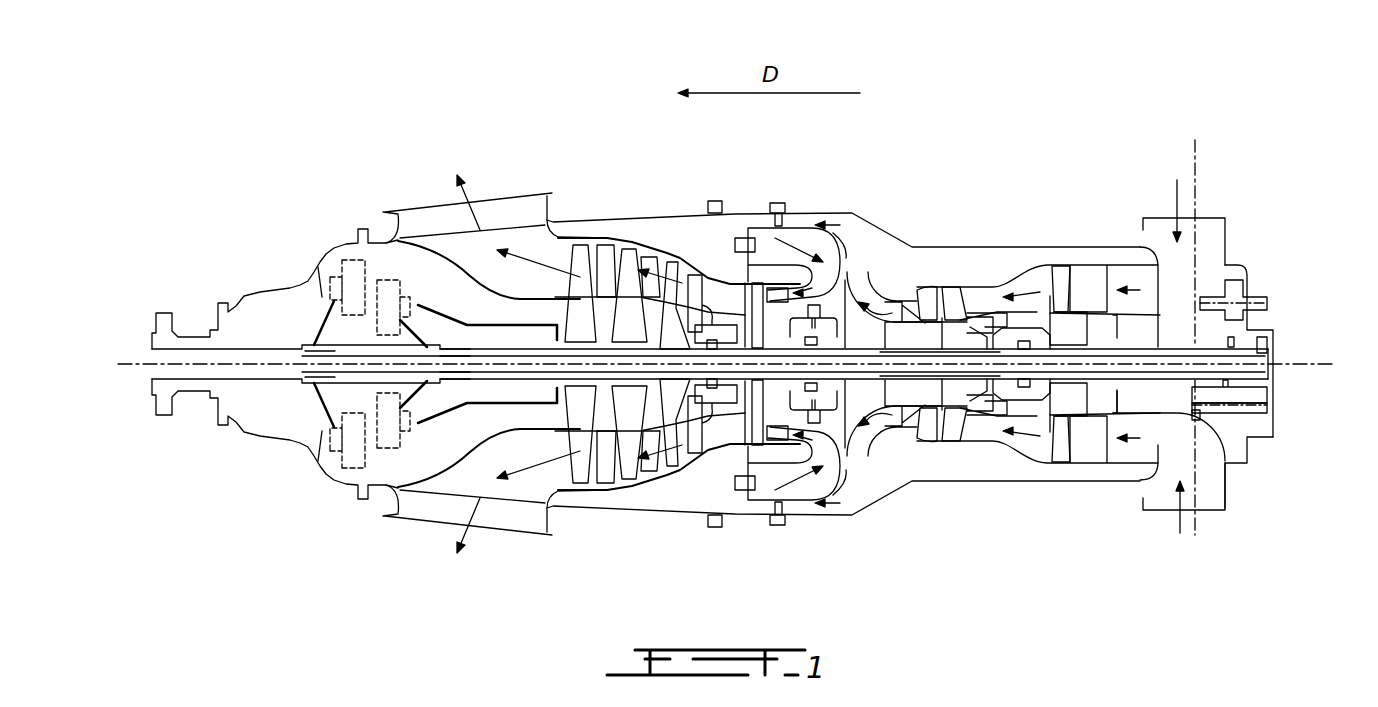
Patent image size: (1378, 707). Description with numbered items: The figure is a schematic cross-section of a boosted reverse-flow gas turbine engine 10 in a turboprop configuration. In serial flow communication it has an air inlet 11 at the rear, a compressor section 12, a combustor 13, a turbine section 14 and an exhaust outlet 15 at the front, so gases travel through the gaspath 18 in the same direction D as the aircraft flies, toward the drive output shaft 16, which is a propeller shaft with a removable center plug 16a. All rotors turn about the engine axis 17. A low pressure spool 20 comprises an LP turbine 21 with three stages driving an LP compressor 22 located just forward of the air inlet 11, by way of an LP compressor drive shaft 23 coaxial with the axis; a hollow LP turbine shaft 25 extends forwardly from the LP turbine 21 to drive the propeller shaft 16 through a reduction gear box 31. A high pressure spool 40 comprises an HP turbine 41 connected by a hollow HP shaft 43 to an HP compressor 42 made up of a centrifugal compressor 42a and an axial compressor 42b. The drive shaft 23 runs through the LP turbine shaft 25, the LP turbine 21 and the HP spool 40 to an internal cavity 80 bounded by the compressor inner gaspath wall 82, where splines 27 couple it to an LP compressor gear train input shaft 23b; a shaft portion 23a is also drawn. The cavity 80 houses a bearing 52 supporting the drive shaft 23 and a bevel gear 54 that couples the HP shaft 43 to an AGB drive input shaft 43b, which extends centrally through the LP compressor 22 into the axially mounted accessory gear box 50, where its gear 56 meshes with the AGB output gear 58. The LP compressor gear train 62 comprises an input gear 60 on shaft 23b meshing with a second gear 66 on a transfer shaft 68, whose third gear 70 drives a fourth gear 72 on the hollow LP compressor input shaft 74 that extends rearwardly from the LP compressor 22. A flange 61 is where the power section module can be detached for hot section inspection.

The gas turbine engine 10 is at (235, 137).
The air inlet 11 is at (1217, 215).
The compressor section 12 is at (868, 575).
The combustor 13 is at (762, 235).
The turbine section 14 is at (753, 575).
The exhaust outlet 15 is at (417, 213).
The drive output shaft 16 is at (166, 312).
The center plug 16a is at (188, 373).
The engine axis 17 is at (133, 363).
The gaspath 18 is at (1058, 440).
The low pressure spool 20 is at (651, 378).
The LP turbine 21 is at (583, 410).
The LP compressor 22 is at (1093, 280).
The LP compressor drive shaft 23 is at (838, 372).
The shaft first portion 23a is at (905, 378).
The LP compressor gear train input shaft 23b is at (1250, 373).
The LP turbine shaft 25 is at (440, 432).
The axially extending splines 27 is at (987, 347).
The reduction gear box 31 is at (349, 262).
The high pressure spool 40 is at (867, 298).
The HP turbine 41 is at (757, 330).
The HP compressor 42 is at (950, 303).
The centrifugal compressor 42a is at (878, 422).
The axial compressor 42b is at (947, 427).
The HP shaft 43 is at (975, 384).
The AGB drive input shaft 43b is at (1201, 324).
The accessory gear box 50 is at (1260, 268).
The bearing 52 is at (1023, 393).
The gear 54 is at (1053, 323).
The gear 56 is at (1234, 342).
The AGB output gear 58 is at (1257, 300).
The input gear 60 is at (1267, 345).
The flange 61 is at (713, 203).
The LP compressor gear train 62 is at (1243, 423).
The second gear 66 is at (1262, 395).
The transfer shaft 68 is at (1195, 425).
The third gear 70 is at (1170, 383).
The fourth gear 72 is at (1157, 347).
The LP compressor input shaft 74 is at (1175, 393).
The internal cavity 80 is at (1007, 327).
The compressor inner gaspath wall 82 is at (1033, 337).